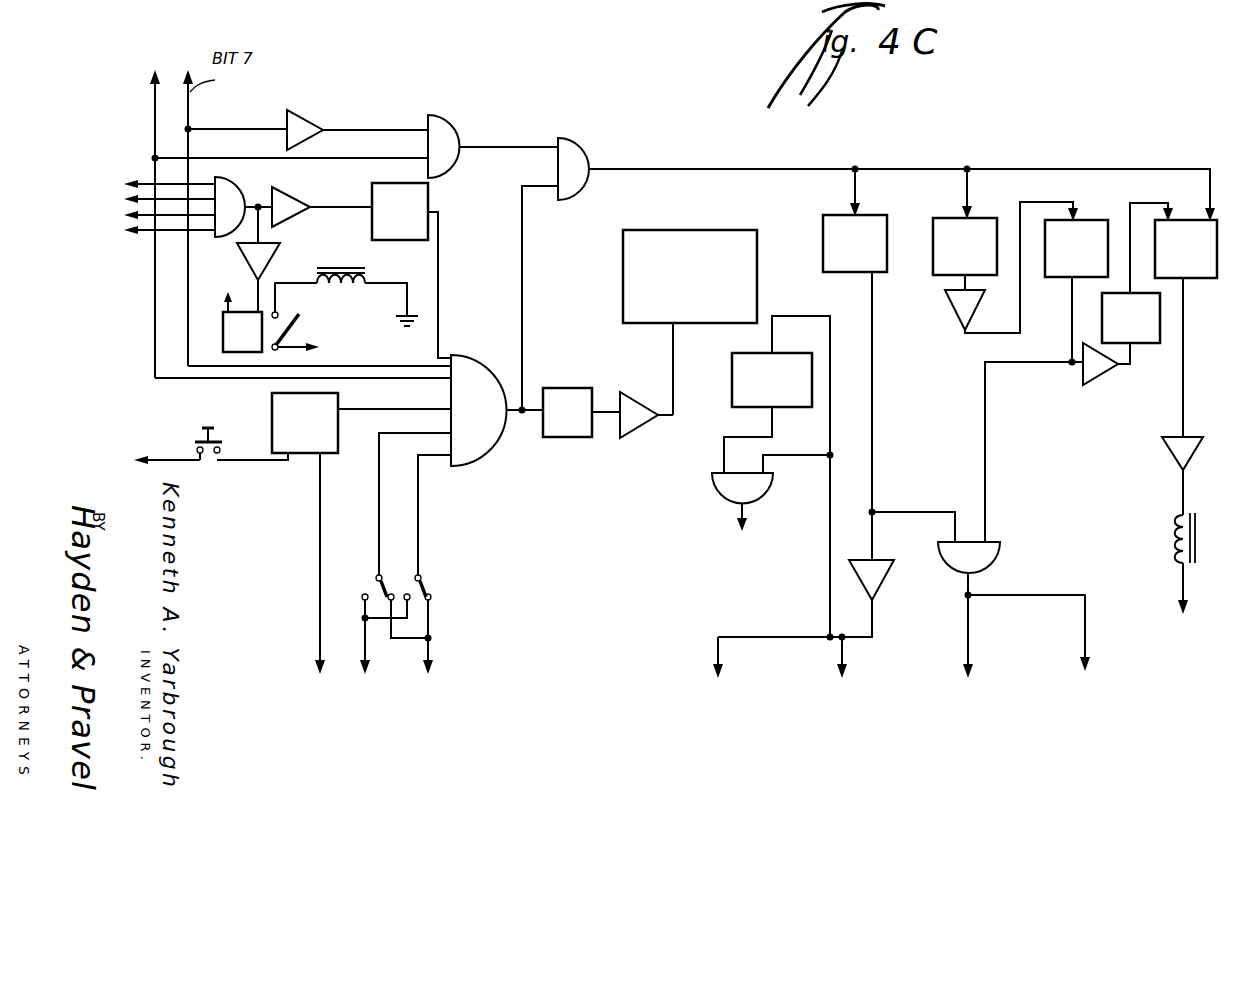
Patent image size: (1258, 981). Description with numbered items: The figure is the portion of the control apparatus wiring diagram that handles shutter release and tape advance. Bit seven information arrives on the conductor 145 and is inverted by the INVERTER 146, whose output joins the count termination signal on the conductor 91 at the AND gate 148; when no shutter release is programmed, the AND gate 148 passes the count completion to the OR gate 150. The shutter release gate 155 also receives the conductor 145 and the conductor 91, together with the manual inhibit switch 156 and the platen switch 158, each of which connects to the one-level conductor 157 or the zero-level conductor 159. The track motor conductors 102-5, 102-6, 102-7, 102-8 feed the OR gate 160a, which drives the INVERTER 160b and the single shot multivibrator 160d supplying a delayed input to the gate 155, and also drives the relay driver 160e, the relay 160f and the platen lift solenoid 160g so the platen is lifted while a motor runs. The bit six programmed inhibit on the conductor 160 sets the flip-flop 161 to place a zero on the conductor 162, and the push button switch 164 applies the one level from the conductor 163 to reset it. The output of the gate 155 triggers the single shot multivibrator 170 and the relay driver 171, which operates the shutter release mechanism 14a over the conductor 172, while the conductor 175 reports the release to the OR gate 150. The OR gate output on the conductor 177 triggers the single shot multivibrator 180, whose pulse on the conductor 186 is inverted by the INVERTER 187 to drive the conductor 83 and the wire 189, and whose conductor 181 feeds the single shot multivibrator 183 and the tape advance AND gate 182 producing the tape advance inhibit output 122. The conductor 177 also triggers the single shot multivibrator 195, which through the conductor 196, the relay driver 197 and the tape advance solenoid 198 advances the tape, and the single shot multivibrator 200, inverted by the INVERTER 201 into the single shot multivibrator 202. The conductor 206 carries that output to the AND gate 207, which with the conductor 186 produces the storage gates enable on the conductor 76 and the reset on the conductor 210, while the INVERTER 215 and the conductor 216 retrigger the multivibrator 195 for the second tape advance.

The conductor 91 is at (155, 94).
The INVERTER 146 is at (305, 110).
The AND gate 148 is at (450, 120).
The OR gate 150 is at (578, 136).
The conductor 177 is at (675, 169).
The conductor 175 is at (522, 267).
The conductor 102-5 is at (142, 182).
The conductor 102-6 is at (142, 198).
The conductor 102-7 is at (142, 214).
The conductor 102-8 is at (142, 230).
The OR gate 160a is at (240, 177).
The INVERTER 160b is at (298, 195).
The single shot multivibrator 160d is at (430, 200).
The relay driver 160e is at (270, 263).
The relay 160f is at (223, 322).
The platen lift solenoid 160g is at (345, 270).
The conductor 145 is at (188, 342).
The flip-flop 161 is at (272, 405).
The conductor 162 is at (355, 412).
The push button switch 164 is at (208, 440).
The conductor 163 is at (172, 458).
The conductor 160 is at (320, 548).
The shutter release gate 155 is at (472, 450).
The platen switch 158 is at (395, 585).
The switch 156 is at (428, 585).
The conductor 159 is at (432, 640).
The conductor 157 is at (367, 655).
The single shot multivibrator 170 is at (565, 437).
The relay driver 171 is at (628, 436).
The conductor 172 is at (673, 348).
The shutter release mechanism 14a is at (690, 230).
The single shot multivibrator 180 is at (823, 222).
The conductor 186 is at (872, 408).
The conductor 181 is at (832, 295).
The single shot multivibrator 183 is at (732, 368).
The tape advance AND gate 182 is at (768, 492).
The tape advance inhibit line 122 is at (742, 514).
The INVERTER 187 is at (886, 583).
The conductor 83 is at (718, 637).
The wire 189 is at (842, 658).
The single shot multivibrator 200 is at (933, 226).
The INVERTER 201 is at (948, 305).
The single shot multivibrator 202 is at (1088, 220).
The conductor 206 is at (1020, 362).
The INVERTER 215 is at (1090, 380).
The conductor 216 is at (1148, 203).
The single shot multivibrator 195 is at (1217, 230).
The conductor 196 is at (1183, 355).
The relay driver 197 is at (1162, 440).
The tape advance solenoid 198 is at (1175, 540).
The AND gate 207 is at (998, 560).
The conductor 76 is at (968, 640).
The conductor 210 is at (1085, 655).